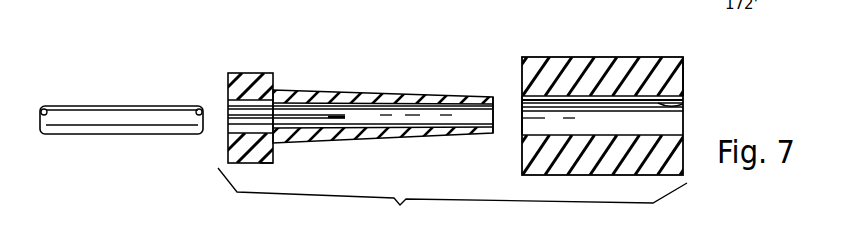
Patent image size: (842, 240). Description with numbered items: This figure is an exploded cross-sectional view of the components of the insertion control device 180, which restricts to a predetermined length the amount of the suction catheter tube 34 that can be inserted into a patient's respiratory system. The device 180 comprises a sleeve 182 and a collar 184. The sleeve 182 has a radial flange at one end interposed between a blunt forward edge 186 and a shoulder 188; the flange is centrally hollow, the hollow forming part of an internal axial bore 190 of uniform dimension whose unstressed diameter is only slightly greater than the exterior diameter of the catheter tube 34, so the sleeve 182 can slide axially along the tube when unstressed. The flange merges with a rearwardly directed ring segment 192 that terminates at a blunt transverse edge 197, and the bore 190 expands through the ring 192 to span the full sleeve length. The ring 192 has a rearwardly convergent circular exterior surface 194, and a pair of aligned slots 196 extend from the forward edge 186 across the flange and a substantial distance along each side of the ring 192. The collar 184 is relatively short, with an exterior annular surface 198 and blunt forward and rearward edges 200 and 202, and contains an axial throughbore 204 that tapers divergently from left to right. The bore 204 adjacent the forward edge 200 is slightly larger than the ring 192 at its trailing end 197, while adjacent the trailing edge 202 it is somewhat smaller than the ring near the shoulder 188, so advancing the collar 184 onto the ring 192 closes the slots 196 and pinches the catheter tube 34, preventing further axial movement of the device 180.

The suction catheter tube 34 is at (83, 105).
The insertion control device 180 is at (462, 119).
The sleeve 182 is at (302, 87).
The collar 184 is at (248, 72).
The blunt forward edge 186 is at (228, 92).
The shoulder 188 is at (275, 152).
The internal axial bore 190 is at (246, 126).
The ring segment 192 is at (367, 94).
The rearwardly convergent circular exterior surface 194 is at (440, 140).
The aligned slots 196 is at (333, 123).
The blunt transverse edge 197 is at (498, 133).
The exterior annular surface 198 is at (630, 56).
The blunt forward edge 200 is at (522, 77).
The blunt rearward edge 202 is at (683, 78).
The axial throughbore 204 is at (683, 103).